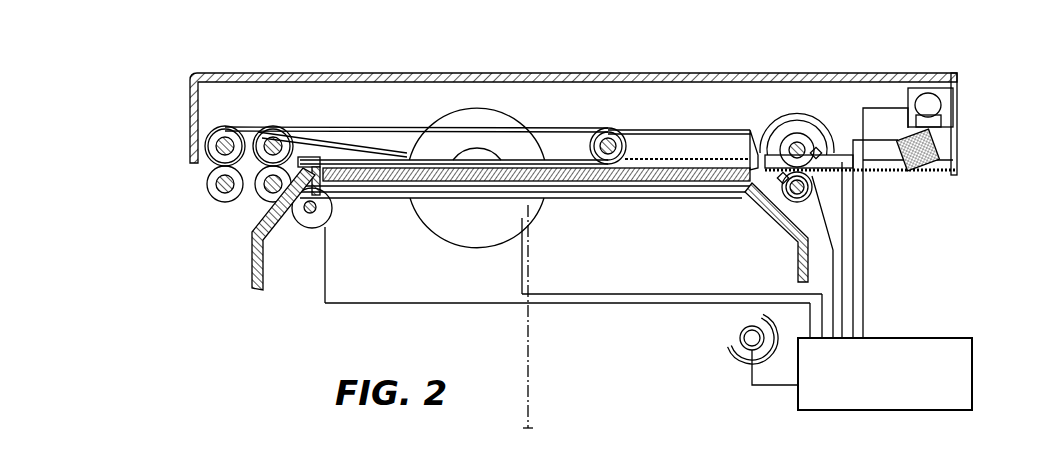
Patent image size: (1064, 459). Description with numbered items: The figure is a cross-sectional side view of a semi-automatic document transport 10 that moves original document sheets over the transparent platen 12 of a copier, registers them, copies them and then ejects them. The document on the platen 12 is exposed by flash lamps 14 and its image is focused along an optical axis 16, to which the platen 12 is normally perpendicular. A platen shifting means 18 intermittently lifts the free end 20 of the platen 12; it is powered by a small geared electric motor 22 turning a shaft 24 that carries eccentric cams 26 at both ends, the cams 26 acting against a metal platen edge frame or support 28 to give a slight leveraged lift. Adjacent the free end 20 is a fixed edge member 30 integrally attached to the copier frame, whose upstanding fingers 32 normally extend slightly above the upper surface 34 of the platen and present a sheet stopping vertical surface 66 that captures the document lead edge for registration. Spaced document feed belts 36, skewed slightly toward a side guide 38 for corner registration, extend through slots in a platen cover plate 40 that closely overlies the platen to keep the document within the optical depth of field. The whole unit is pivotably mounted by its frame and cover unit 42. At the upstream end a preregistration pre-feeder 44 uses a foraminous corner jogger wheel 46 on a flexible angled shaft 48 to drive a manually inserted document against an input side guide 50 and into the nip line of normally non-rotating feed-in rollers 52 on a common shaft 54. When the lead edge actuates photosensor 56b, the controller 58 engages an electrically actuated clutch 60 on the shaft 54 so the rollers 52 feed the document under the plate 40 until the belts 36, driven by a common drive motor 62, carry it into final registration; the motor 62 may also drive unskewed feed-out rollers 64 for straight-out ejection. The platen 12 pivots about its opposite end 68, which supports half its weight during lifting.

The semi-automatic document transport 10 is at (430, 105).
The platen 12 is at (588, 186).
The flash lamps 14 is at (742, 332).
The optical axis 16 is at (530, 331).
The platen shifting means 18 is at (551, 254).
The free end of the platen 20 is at (330, 170).
The geared electric motor 22 is at (291, 228).
The shaft 24 is at (316, 228).
The eccentric cams 26 is at (337, 228).
The platen edge frame or support 28 is at (644, 192).
The fixed edge member 30 is at (275, 214).
The upstanding fingers 32 is at (252, 240).
The upper surface of the platen 34 is at (386, 170).
The document feed belts 36 is at (566, 126).
The side guide 38 is at (752, 156).
The platen cover plate 40 is at (667, 158).
The frame and cover unit 42 is at (880, 173).
The preregistration pre-feeder 44 is at (958, 143).
The corner jogger wheel 46 is at (932, 170).
The flexible angled shaft 48 is at (952, 122).
The input side guide 50 is at (876, 160).
The feed-in rollers 52 is at (798, 142).
The common shaft 54 is at (820, 142).
The photosensor 56b is at (820, 160).
The controller 58 is at (947, 337).
The electrically actuated clutch 60 is at (788, 115).
The common drive motor 62 is at (505, 118).
The feed-out rollers 64 is at (240, 108).
The sheet stopping vertical surface 66 is at (322, 163).
The opposite end of the platen 68 is at (731, 188).